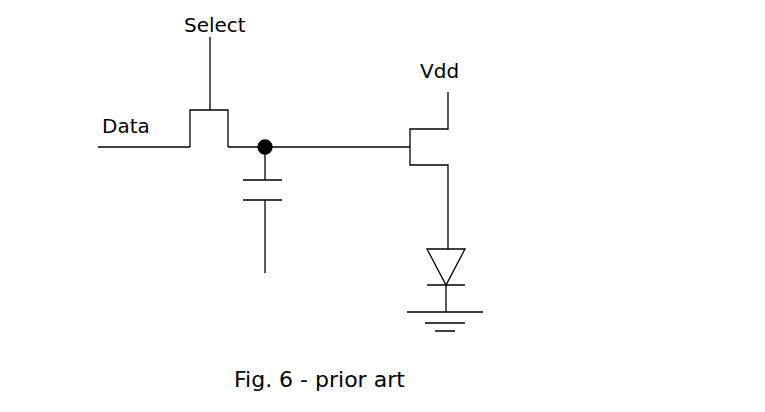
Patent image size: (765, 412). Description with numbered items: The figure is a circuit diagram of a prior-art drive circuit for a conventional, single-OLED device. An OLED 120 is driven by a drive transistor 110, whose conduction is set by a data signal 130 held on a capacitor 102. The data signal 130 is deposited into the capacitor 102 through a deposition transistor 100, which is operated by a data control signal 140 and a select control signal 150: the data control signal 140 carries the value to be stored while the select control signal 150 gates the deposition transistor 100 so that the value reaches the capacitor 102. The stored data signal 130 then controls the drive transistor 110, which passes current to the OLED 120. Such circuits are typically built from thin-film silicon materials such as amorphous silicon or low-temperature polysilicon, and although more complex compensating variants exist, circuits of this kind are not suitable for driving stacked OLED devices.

The deposition transistor 100 is at (218, 109).
The capacitor 102 is at (250, 203).
The drive transistor 110 is at (428, 166).
The OLED 120 is at (458, 263).
The data signal 130 is at (357, 148).
The data control signal 140 is at (148, 148).
The select control signal 150 is at (208, 96).